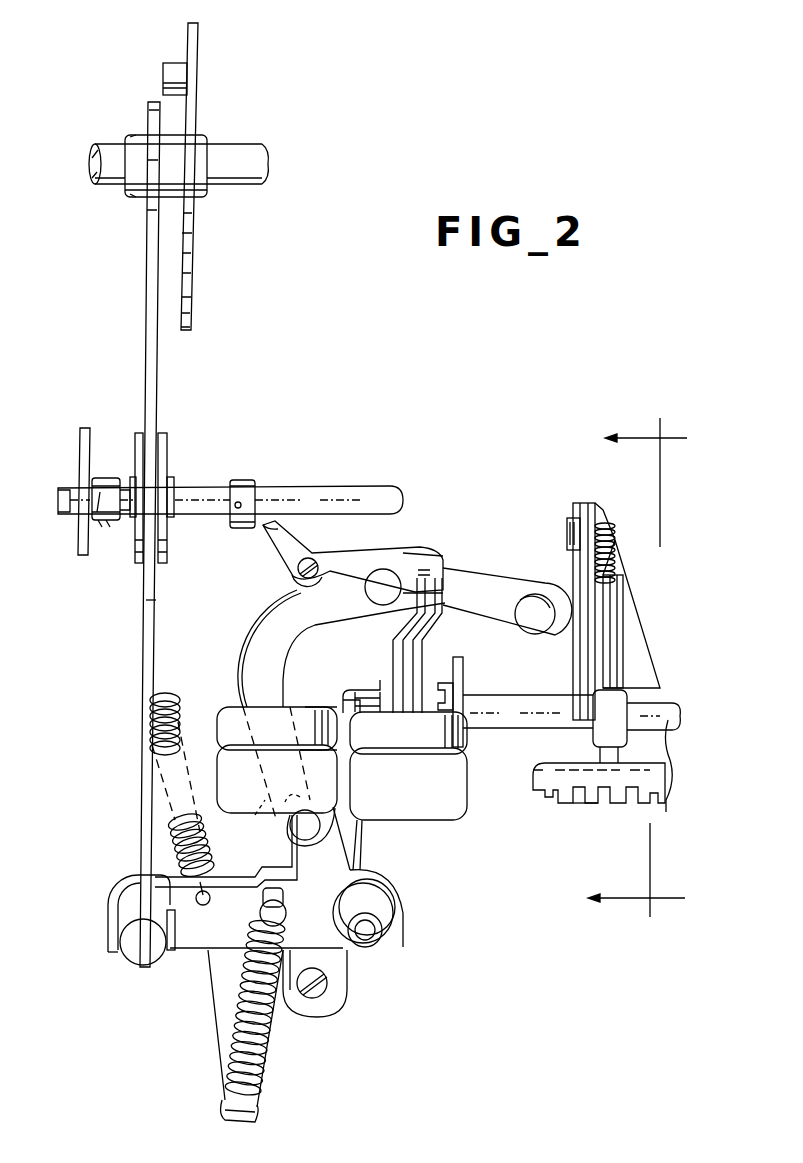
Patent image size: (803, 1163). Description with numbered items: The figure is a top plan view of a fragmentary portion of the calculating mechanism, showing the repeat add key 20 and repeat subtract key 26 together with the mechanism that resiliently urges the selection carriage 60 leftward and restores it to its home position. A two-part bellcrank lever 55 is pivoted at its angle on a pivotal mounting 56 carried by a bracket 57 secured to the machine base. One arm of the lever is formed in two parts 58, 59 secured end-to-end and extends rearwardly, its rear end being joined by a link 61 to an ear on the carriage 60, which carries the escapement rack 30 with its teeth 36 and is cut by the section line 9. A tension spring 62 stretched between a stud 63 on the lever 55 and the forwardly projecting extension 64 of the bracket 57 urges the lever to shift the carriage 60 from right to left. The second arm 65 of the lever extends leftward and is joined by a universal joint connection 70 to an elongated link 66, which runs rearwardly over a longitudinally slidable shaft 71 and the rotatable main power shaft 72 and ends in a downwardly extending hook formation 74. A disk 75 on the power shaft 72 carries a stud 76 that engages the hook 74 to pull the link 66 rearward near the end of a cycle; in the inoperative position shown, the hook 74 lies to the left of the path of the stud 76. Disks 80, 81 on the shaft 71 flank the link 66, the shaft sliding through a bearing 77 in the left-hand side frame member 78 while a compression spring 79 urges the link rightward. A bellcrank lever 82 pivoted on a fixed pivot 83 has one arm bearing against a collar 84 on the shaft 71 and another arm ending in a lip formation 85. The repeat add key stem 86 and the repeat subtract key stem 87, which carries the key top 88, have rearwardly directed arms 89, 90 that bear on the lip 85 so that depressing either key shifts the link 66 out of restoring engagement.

The section line 9 is at (637, 666).
The repeat add key 20 is at (466, 814).
The repeat subtract key 26 is at (249, 813).
The escapement rack 30 is at (668, 768).
The teeth 36 is at (630, 810).
The two-part bellcrank lever 55 is at (275, 866).
The pivotal mounting 56 is at (386, 935).
The bracket 57 is at (348, 982).
The lever arm part 58 is at (340, 852).
The lever arm part 59 is at (249, 638).
The carriage 60 is at (573, 549).
The link 61 is at (504, 577).
The tension spring 62 is at (237, 1033).
The stud 63 is at (284, 893).
The forwardly projecting extension 64 is at (222, 1080).
The second arm 65 is at (208, 942).
The elongated link 66 is at (143, 640).
The universal joint connection 70 is at (136, 960).
The shaft 71 is at (343, 498).
The main power shaft 72 is at (254, 153).
The hook formation 74 is at (152, 103).
The plate or disk 75 is at (193, 50).
The stud 76 is at (167, 67).
The bearing 77 is at (101, 521).
The left-hand side frame member 78 is at (80, 462).
The compression spring 79 is at (125, 479).
The disk 80 is at (136, 440).
The disk 81 is at (167, 440).
The bellcrank lever 82 is at (282, 557).
The fixed pivot 83 is at (297, 573).
The collar 84 is at (254, 464).
The lip formation 85 is at (445, 562).
The stem 86 is at (422, 680).
The stem 87 is at (376, 680).
The repeat subtract key top 88 is at (330, 707).
The rearwardly directed arm 89 is at (430, 645).
The rearwardly directed arm 90 is at (396, 655).